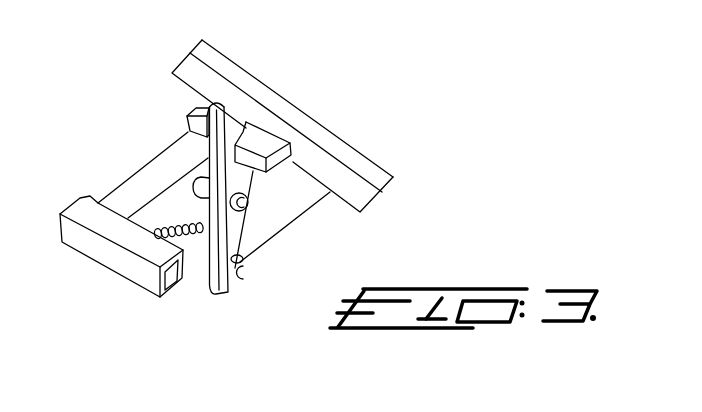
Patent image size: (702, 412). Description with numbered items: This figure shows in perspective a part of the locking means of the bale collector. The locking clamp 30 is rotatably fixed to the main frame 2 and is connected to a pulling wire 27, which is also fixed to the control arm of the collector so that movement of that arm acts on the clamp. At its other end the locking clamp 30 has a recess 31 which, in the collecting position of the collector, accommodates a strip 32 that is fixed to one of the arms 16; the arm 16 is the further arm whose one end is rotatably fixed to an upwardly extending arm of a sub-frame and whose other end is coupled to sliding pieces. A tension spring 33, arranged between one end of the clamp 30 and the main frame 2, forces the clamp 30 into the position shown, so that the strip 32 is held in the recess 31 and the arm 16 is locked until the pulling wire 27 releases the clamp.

The main frame 2 is at (103, 218).
The arm 16 is at (228, 71).
The pulling wire 27 is at (374, 159).
The locking clamp 30 is at (240, 276).
The recess 31 is at (263, 173).
The strip 32 is at (201, 114).
The tension spring 33 is at (194, 241).